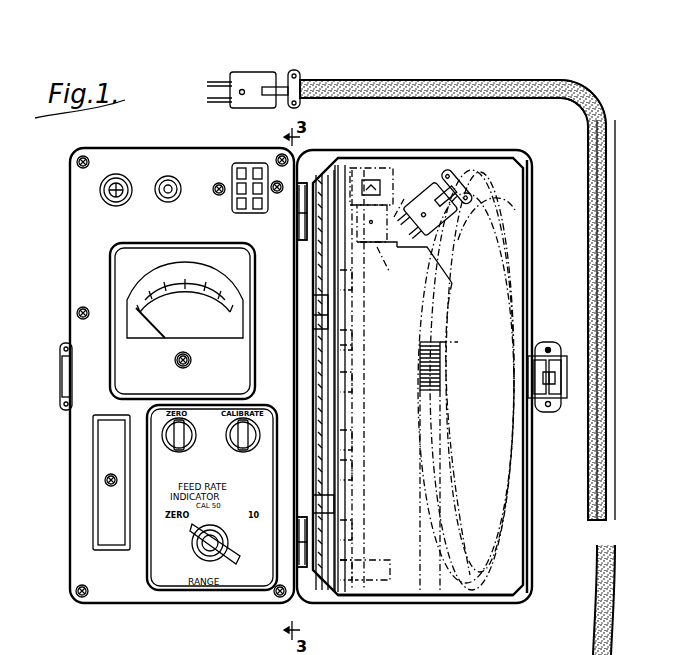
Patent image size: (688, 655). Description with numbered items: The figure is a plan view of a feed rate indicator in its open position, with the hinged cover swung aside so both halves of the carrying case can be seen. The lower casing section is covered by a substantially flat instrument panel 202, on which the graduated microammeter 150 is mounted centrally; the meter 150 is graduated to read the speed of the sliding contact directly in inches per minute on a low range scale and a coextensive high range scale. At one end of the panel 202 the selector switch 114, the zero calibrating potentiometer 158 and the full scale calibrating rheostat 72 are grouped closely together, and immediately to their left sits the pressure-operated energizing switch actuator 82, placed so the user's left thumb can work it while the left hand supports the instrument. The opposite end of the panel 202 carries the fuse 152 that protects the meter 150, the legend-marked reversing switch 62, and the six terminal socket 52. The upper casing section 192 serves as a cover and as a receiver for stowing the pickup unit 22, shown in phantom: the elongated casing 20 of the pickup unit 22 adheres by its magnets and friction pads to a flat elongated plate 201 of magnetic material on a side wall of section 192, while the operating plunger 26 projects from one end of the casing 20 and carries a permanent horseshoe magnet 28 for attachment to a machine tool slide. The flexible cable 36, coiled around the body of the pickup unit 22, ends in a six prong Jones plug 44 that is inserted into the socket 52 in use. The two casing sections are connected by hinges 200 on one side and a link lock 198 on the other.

The casing 20 is at (397, 577).
The pickup unit 22 is at (444, 276).
The operating plunger 26 is at (380, 262).
The permanent horseshoe magnet 28 is at (388, 170).
The flexible cable 36 is at (443, 67).
The Jones plug 44 is at (259, 61).
The six terminal socket 52 is at (228, 163).
The reversing switch 62 is at (143, 186).
The full scale calibrating rheostat 72 is at (243, 451).
The energizing switch actuator 82 is at (100, 495).
The selector switch 114 is at (208, 543).
The microammeter 150 is at (134, 240).
The fuse 152 is at (116, 206).
The zero calibrating potentiometer 158 is at (181, 451).
The upper casing section 192 is at (437, 598).
The link lock 198 is at (545, 408).
The hinges 200 is at (305, 183).
The flat elongated plate 201 is at (335, 388).
The instrument panel 202 is at (83, 428).